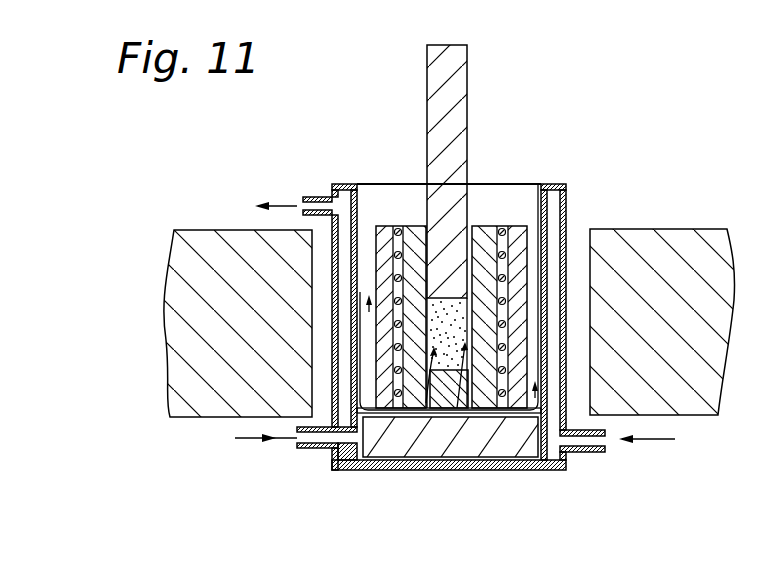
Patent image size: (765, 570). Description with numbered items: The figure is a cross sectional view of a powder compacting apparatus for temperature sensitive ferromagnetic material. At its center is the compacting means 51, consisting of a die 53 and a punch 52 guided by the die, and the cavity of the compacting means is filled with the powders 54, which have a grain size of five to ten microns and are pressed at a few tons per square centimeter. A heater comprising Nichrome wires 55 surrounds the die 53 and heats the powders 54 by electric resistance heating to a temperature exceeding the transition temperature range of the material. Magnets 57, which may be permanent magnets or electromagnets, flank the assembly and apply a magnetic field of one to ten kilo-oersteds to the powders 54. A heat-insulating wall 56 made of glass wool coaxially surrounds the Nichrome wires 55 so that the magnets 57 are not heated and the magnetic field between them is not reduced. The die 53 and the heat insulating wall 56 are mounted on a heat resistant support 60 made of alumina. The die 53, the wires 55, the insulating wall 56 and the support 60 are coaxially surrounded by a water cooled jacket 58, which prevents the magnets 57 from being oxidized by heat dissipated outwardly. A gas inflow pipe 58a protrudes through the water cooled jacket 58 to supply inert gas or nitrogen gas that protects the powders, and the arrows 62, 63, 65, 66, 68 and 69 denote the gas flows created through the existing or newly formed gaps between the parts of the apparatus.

The compacting means 51 is at (474, 109).
The punch 52 is at (460, 63).
The die 53 is at (492, 412).
The powders 54 is at (462, 410).
The Nichrome wires 55 is at (398, 226).
The heat-insulating wall 56 is at (508, 226).
The magnets 57 is at (190, 413).
The water cooled jacket 58 is at (335, 186).
The gas inflow pipe 58a is at (307, 451).
The heat resistant support 60 is at (532, 462).
The gas flow arrow 62 is at (288, 441).
The gas flow arrow 63 is at (382, 418).
The gas flow arrow 65 is at (536, 395).
The gas flow arrow 66 is at (422, 380).
The gas flow arrow 68 is at (655, 444).
The gas flow arrow 69 is at (275, 205).